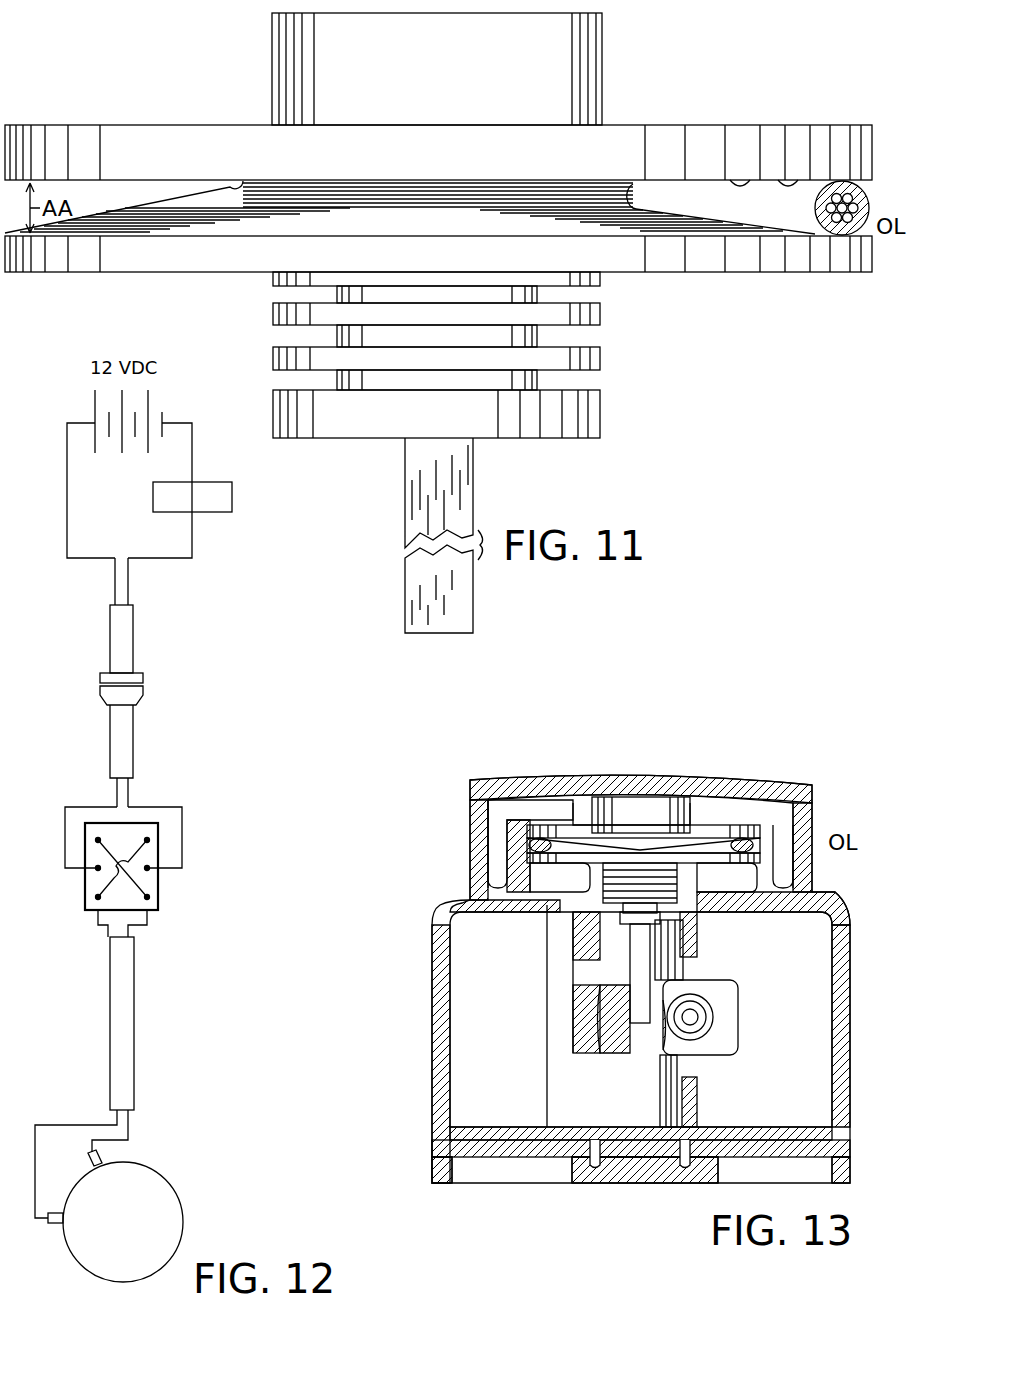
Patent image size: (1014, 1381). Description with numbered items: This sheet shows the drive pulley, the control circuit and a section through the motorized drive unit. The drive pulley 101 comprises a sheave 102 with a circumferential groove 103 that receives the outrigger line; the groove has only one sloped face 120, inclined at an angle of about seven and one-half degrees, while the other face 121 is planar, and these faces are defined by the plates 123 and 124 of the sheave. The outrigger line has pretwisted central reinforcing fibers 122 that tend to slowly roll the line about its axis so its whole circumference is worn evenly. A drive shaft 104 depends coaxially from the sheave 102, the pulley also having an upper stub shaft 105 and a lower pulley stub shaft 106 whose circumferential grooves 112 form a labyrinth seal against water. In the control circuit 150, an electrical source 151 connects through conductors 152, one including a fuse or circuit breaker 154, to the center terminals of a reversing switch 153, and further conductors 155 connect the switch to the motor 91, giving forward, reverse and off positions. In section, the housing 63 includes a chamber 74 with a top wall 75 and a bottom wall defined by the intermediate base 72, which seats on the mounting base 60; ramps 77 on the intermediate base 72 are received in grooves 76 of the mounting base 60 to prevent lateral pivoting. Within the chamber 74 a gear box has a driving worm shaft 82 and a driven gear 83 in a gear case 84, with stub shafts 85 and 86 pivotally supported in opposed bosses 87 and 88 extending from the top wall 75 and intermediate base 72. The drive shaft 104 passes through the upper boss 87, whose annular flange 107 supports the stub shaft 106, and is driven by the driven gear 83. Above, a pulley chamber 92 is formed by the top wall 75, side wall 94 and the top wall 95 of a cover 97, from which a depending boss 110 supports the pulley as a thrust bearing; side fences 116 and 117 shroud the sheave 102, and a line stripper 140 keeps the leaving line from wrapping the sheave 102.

In FIG. 11, the upper stub shaft 105 is at (575, 70).
In FIG. 13, the upper stub shaft 105 is at (622, 812).
In FIG. 11, the drive pulley 101 is at (672, 105).
In FIG. 11, the upper plate 124 is at (438, 152).
In FIG. 11, the lower plate 123 is at (438, 254).
In FIG. 11, the sheave 102 is at (700, 140).
In FIG. 13, the sheave 102 is at (715, 822).
In FIG. 11, the circumferential groove 103 is at (742, 182).
In FIG. 11, the planar face 121 is at (790, 182).
In FIG. 11, the central reinforcing fibers 122 is at (862, 204).
In FIG. 11, the sloped face 120 is at (742, 213).
In FIG. 11, the circumferential grooves 112 is at (583, 348).
In FIG. 13, the circumferential grooves 112 is at (640, 883).
In FIG. 11, the lower pulley stub shaft 106 is at (580, 415).
In FIG. 13, the lower pulley stub shaft 106 is at (612, 910).
In FIG. 11, the drive shaft 104 is at (458, 495).
In FIG. 13, the drive shaft 104 is at (640, 968).
In FIG. 12, the electrical source 151 is at (95, 410).
In FIG. 12, the fuse or circuit breaker 154 is at (210, 512).
In FIG. 12, the manual control circuit 150 is at (160, 752).
In FIG. 12, the conductors 152 is at (75, 807).
In FIG. 12, the reversing switch 153 is at (158, 893).
In FIG. 12, the further conductors 155 is at (80, 1125).
In FIG. 12, the motor 91 is at (165, 1180).
In FIG. 13, the housing 63 is at (428, 909).
In FIG. 13, the chamber 74 is at (820, 965).
In FIG. 13, the top wall 75 is at (445, 890).
In FIG. 13, the top wall of cover 95 is at (545, 785).
In FIG. 13, the cover 97 is at (492, 800).
In FIG. 13, the pulley chamber 92 is at (800, 808).
In FIG. 13, the side wall 94 is at (803, 825).
In FIG. 13, the side fence 116 is at (760, 878).
In FIG. 13, the side fence 117 is at (515, 860).
In FIG. 13, the line stripper 140 is at (670, 825).
In FIG. 13, the depending boss 110 is at (725, 825).
In FIG. 13, the annular flange 107 is at (618, 918).
In FIG. 13, the upper boss 87 is at (690, 940).
In FIG. 13, the upper stub shaft 85 is at (672, 966).
In FIG. 13, the driven gear 83 is at (615, 1016).
In FIG. 13, the gear case 84 is at (735, 1052).
In FIG. 13, the driving worm shaft 82 is at (692, 1018).
In FIG. 13, the lower stub shaft 86 is at (665, 1075).
In FIG. 13, the lower boss 88 is at (690, 1093).
In FIG. 13, the intermediate base 72 is at (495, 1130).
In FIG. 13, the mounting base 60 is at (440, 1155).
In FIG. 13, the grooves 76 is at (595, 1162).
In FIG. 13, the ramps 77 is at (685, 1162).